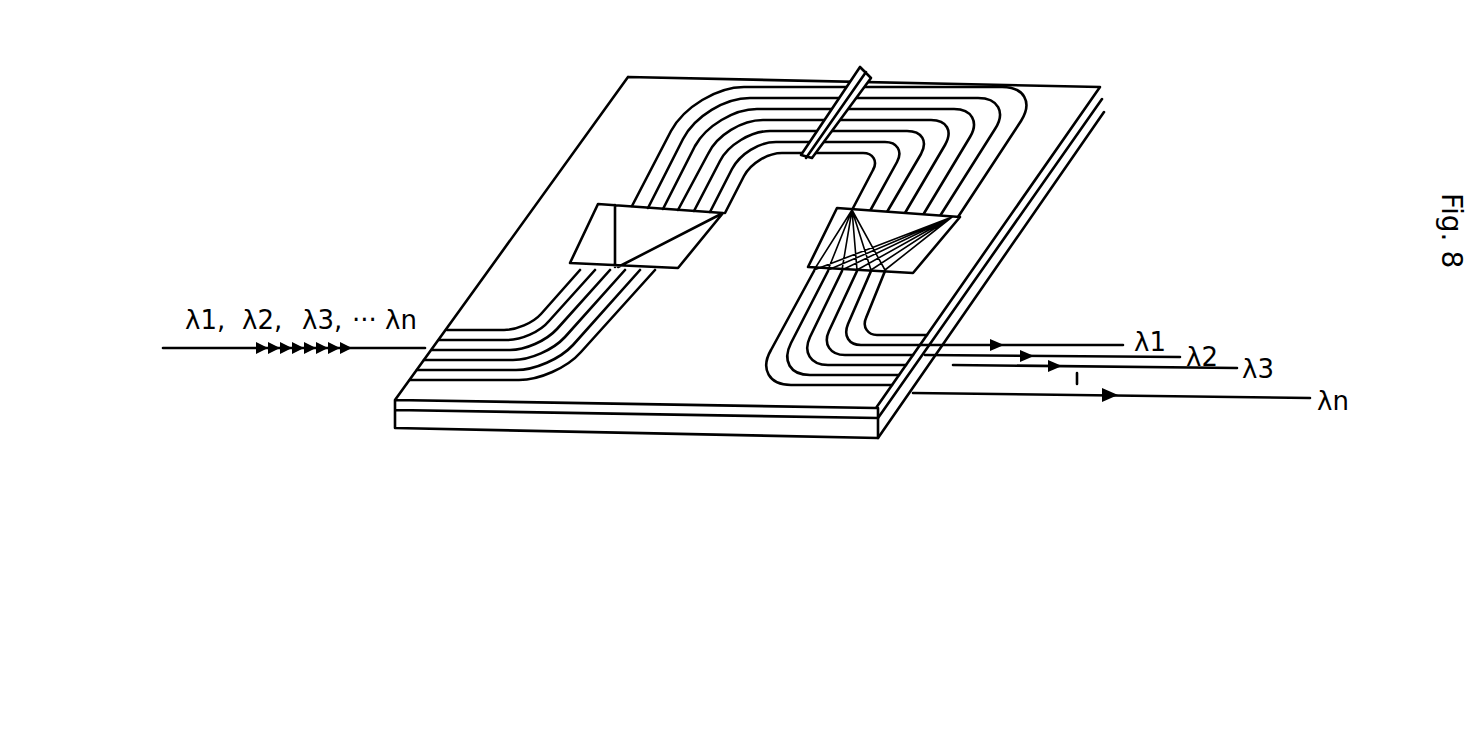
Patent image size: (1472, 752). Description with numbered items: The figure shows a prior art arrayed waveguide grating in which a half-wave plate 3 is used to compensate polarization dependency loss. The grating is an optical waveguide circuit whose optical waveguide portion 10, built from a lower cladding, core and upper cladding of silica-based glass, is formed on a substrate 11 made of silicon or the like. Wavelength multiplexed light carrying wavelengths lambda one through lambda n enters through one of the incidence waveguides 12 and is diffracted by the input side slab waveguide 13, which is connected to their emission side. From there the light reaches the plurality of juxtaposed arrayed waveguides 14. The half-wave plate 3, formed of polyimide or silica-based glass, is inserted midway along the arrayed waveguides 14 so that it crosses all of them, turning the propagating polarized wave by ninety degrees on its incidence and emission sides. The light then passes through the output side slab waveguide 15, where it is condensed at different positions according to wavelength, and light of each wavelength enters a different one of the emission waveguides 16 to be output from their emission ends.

The half-wave plate 3 is at (874, 75).
The optical waveguide portion 10 is at (1102, 100).
The substrate 11 is at (1095, 118).
The incidence waveguides 12 is at (477, 330).
The input side slab waveguide 13 is at (590, 223).
The arrayed waveguides 14 is at (657, 140).
The output side slab waveguide 15 is at (952, 232).
The emission waveguides 16 is at (867, 330).